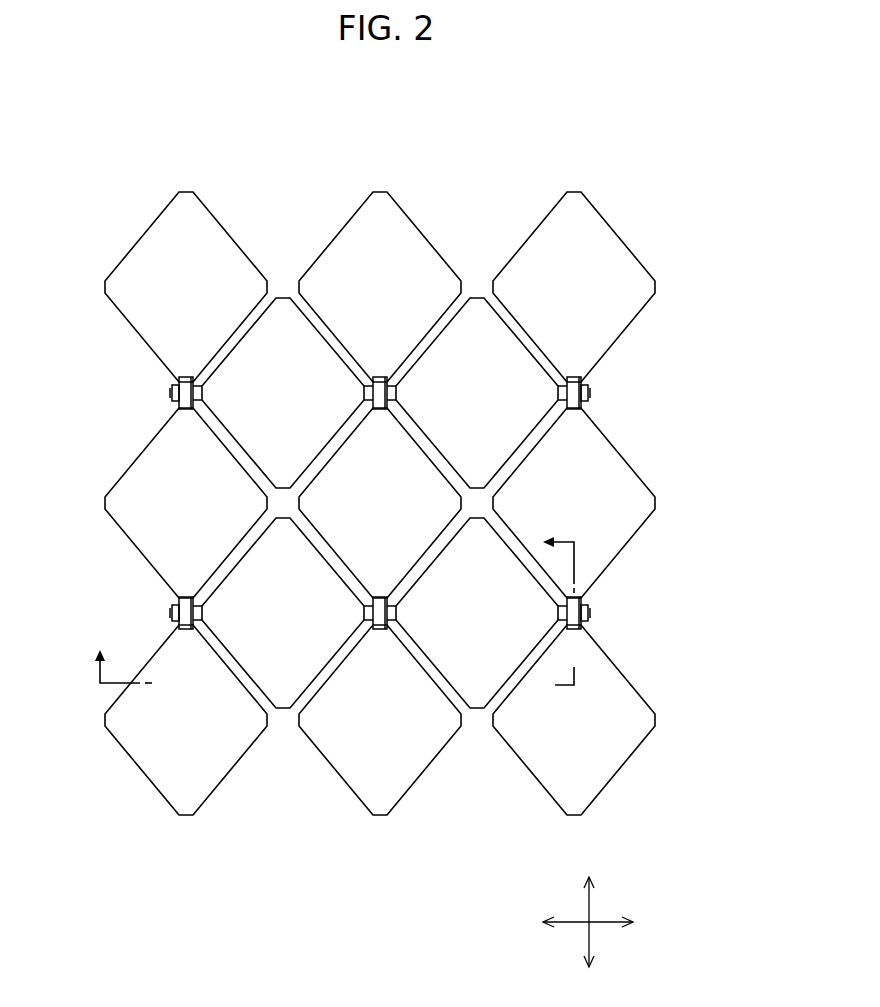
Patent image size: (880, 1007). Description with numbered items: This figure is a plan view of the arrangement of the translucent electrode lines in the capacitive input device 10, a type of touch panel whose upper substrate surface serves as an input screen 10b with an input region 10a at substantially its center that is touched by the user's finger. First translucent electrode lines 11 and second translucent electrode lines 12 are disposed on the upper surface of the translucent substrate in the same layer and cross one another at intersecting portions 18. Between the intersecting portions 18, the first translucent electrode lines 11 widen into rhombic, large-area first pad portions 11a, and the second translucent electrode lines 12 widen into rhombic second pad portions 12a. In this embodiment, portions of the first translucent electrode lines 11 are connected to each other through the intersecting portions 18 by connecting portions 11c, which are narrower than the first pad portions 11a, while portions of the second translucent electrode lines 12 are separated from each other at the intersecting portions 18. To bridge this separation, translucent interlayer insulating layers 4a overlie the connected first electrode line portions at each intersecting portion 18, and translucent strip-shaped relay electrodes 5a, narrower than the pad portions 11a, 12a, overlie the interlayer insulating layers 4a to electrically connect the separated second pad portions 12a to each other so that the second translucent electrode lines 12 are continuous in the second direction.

The capacitive input device 10 is at (354, 112).
The input region 10a is at (398, 112).
The input screen 10b is at (442, 112).
The first translucent electrode lines 11 is at (228, 431).
The first pad portions 11a is at (326, 503).
The connecting portions 11c is at (392, 626).
The second translucent electrode lines 12 is at (220, 221).
The second pad portions 12a is at (170, 516).
The intersecting portions 18 is at (379, 585).
The interlayer insulating layers 4a is at (366, 612).
The relay electrodes 5a is at (390, 610).